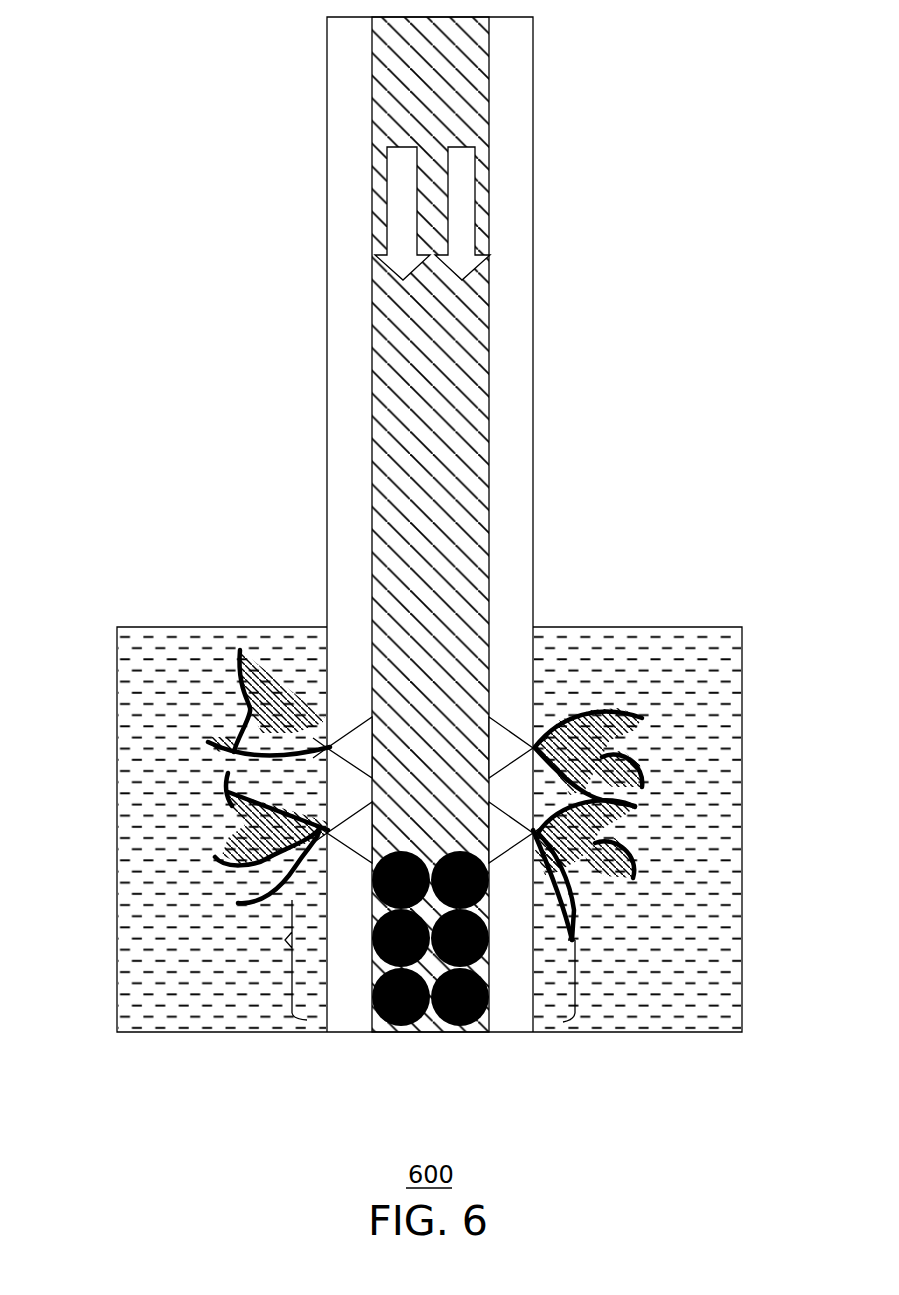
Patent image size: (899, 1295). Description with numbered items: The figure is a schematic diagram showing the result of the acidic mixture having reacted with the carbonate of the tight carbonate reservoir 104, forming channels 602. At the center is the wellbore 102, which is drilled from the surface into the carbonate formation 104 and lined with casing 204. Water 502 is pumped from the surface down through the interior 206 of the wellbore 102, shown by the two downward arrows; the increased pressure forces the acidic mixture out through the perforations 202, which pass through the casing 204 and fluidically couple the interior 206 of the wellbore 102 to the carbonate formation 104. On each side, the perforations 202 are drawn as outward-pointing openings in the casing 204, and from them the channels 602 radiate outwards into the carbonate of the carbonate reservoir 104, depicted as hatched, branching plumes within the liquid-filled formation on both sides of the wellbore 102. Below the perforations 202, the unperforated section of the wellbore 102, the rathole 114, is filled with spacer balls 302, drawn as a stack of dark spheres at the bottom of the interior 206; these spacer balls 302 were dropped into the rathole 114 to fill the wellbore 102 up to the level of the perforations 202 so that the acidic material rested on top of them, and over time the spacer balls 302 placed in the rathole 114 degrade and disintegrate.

The wellbore 102 is at (565, 428).
The carbonate formation 104 is at (145, 722).
The rathole 114 is at (575, 940).
The perforations 202 is at (358, 722).
The casing 204 is at (520, 90).
The interior 206 is at (470, 368).
The spacer balls 302 is at (428, 1032).
The water 502 is at (398, 208).
The channels 602 is at (245, 725).